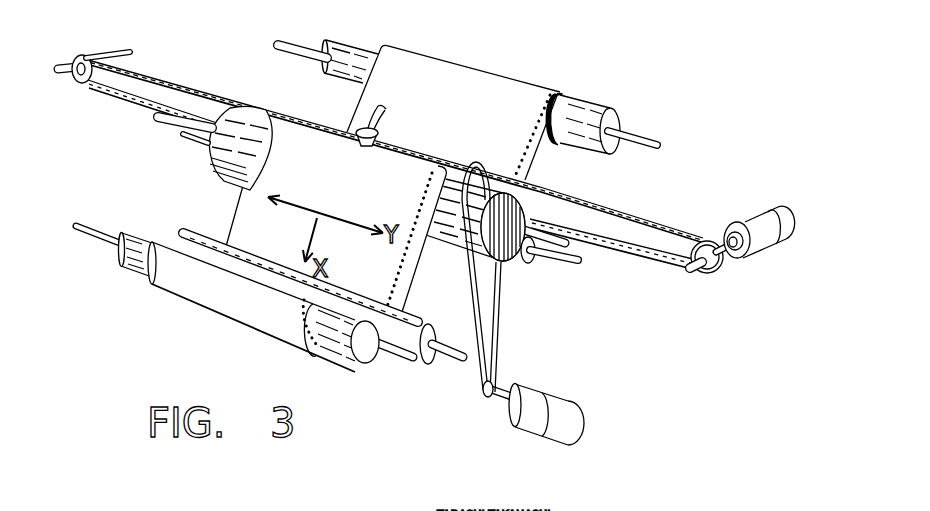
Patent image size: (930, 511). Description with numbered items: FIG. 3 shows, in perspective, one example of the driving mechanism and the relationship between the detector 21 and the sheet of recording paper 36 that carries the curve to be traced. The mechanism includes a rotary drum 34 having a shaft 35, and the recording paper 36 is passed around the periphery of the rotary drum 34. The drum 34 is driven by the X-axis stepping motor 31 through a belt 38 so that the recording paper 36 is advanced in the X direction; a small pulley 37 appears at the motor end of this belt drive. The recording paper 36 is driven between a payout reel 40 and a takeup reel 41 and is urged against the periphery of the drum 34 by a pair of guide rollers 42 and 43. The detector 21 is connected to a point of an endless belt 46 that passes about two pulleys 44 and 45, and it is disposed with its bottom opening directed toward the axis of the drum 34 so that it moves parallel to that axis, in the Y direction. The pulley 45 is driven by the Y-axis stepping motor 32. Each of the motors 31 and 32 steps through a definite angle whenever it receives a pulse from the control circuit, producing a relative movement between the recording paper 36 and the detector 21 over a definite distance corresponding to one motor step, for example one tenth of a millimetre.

The detector 21 is at (360, 127).
The X-axis stepping motor 31 is at (543, 372).
The Y-axis stepping motor 32 is at (740, 209).
The rotary drum 34 is at (527, 213).
The shaft 35 is at (165, 127).
The recording paper 36 is at (243, 198).
The pulley 37 is at (488, 402).
The belt 38 is at (465, 302).
The payout reel 40 is at (594, 114).
The takeup reel 41 is at (353, 355).
The guide roller 42 is at (428, 363).
The guide roller 43 is at (521, 254).
The pulley 44 is at (88, 53).
The pulley 45 is at (713, 276).
The endless belt 46 is at (650, 220).